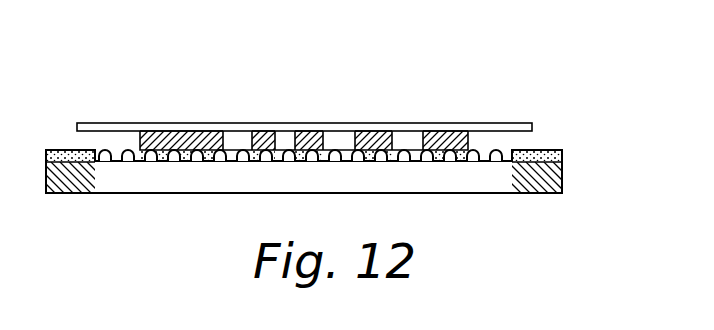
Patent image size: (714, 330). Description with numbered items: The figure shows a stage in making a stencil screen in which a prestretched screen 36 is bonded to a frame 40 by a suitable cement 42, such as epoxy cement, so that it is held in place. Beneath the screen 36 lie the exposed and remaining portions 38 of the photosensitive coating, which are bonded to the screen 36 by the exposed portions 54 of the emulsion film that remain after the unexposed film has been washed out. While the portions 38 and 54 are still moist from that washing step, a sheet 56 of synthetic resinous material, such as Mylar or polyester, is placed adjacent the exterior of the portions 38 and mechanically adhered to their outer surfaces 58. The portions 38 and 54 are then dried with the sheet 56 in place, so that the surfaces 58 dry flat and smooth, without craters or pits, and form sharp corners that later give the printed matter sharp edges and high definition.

The prestretched screen 36 is at (498, 151).
The exposed portions of the photosensitive coating 38 is at (260, 135).
The frame 40 is at (562, 175).
The cement 42 is at (73, 152).
The exposed portions of the film 54 is at (263, 162).
The sheet of synthetic resinous material 56 is at (94, 123).
The outer surfaces 58 is at (163, 133).